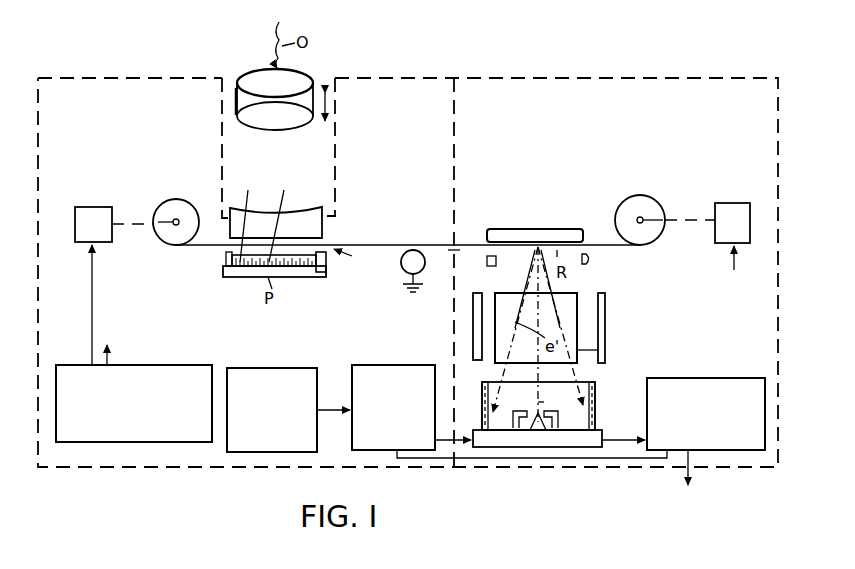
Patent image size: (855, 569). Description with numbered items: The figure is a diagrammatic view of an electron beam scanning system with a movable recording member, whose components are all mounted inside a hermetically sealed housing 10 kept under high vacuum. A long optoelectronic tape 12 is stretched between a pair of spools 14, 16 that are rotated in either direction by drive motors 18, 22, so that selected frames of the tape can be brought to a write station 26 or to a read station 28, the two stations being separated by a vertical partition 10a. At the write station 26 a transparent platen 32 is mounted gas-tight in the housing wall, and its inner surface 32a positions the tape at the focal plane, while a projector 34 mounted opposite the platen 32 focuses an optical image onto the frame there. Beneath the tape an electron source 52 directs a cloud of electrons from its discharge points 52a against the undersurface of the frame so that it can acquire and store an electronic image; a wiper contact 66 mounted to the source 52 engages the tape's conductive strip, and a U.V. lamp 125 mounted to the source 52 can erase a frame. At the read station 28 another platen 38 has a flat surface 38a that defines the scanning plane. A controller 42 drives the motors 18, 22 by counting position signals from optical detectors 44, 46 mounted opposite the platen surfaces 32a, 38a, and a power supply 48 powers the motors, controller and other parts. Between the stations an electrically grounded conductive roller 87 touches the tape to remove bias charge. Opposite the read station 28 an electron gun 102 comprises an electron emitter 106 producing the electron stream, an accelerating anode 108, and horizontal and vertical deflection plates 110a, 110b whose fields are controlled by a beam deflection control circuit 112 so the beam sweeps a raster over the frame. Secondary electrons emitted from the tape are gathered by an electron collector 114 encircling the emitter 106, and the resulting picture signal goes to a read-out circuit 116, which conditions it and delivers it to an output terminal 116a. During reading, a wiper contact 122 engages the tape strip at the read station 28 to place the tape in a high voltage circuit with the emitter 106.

The hermetically sealed housing 10 is at (185, 470).
The vertical partition 10a is at (457, 121).
The optoelectronic tape 12 is at (366, 245).
The spool 14 is at (172, 199).
The spool 16 is at (645, 196).
The drive motor 18 is at (97, 207).
The drive motor 22 is at (736, 203).
The write station 26 is at (355, 261).
The read station 28 is at (530, 253).
The transparent platen 32 is at (314, 217).
The inner surface 32a is at (247, 216).
The projector 34 is at (235, 96).
The platen 38 is at (563, 229).
The flat surface 38a is at (513, 229).
The controller 42 is at (134, 343).
The optical detector 44 is at (315, 272).
The optical detector 46 is at (590, 259).
The power supply 48 is at (288, 410).
The electron source 52 is at (240, 277).
The discharge points 52a is at (285, 216).
The wiper contact 66 is at (223, 258).
The grounded conductive roller 87 is at (422, 270).
The electron gun 102 is at (472, 377).
The electron emitter 106 is at (537, 430).
The accelerating anode 108 is at (565, 430).
The horizontal deflection plate 110a is at (473, 318).
The vertical deflection plate 110b is at (620, 340).
The beam deflection control circuit 112 is at (360, 365).
The electron collector 114 is at (595, 416).
The read-out circuit 116 is at (706, 378).
The output terminal 116a is at (697, 468).
The wiper contact 122 is at (487, 260).
The U.V. lamp 125 is at (327, 256).